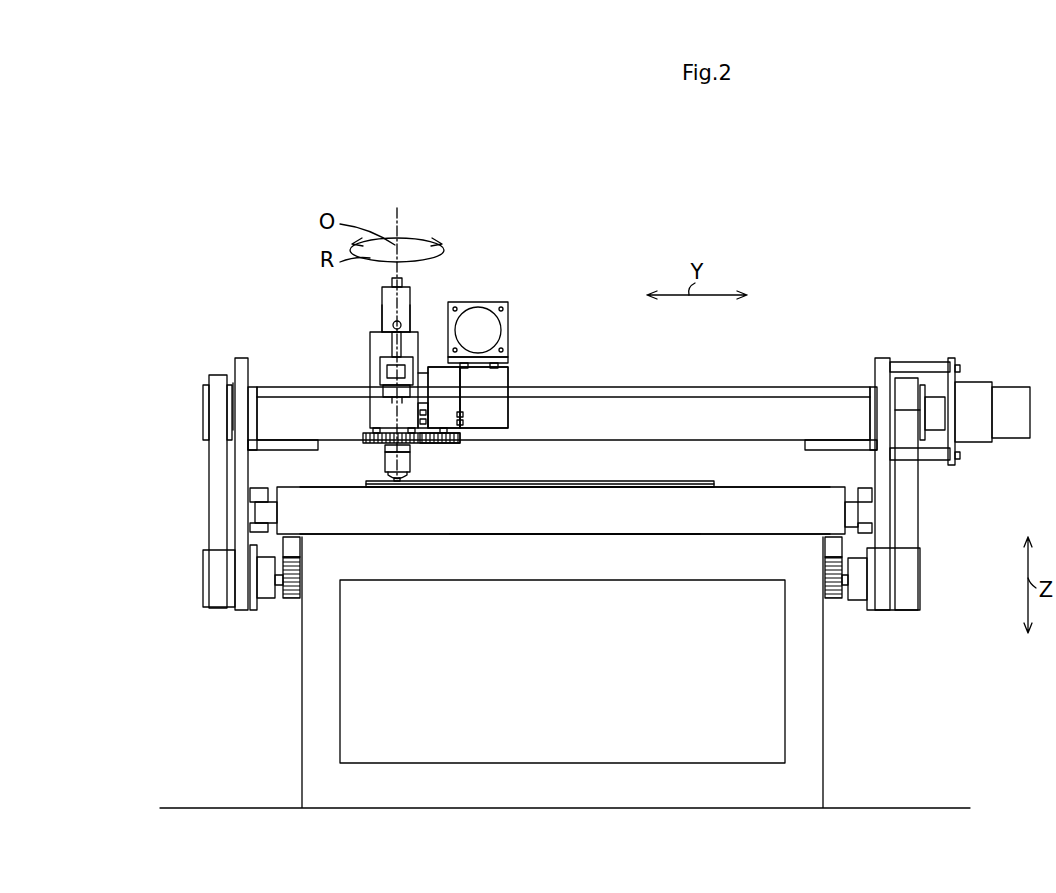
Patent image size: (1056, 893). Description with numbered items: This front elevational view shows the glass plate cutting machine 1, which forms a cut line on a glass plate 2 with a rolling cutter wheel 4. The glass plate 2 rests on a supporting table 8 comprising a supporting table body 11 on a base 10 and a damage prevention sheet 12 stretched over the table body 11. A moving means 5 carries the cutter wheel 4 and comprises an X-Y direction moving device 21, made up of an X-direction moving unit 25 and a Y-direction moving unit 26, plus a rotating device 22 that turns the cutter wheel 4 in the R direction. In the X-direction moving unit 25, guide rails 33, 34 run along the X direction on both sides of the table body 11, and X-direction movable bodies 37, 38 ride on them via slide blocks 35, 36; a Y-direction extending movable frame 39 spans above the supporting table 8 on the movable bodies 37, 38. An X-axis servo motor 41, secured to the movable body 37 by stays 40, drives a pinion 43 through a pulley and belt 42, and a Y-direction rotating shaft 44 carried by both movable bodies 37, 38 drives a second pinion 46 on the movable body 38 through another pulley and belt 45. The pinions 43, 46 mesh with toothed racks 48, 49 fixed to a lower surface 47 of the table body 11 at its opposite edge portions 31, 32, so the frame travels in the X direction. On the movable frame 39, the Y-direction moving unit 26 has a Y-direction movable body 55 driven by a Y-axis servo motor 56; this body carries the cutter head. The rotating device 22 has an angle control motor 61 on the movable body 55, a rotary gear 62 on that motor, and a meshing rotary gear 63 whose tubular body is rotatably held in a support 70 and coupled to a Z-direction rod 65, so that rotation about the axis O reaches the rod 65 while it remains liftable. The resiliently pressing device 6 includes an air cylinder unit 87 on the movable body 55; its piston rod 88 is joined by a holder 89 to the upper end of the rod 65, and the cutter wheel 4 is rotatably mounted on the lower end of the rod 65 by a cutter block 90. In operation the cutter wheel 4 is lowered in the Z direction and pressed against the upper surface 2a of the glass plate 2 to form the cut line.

The glass plate cutting machine 1 is at (208, 362).
The glass plate 2 is at (566, 482).
The upper surface 2a is at (605, 482).
The cutter wheel 4 is at (397, 481).
The moving means 5 is at (200, 380).
The resiliently pressing device 6 is at (415, 292).
The supporting table 8 is at (520, 527).
The base 10 is at (560, 810).
The supporting table body 11 is at (556, 527).
The damage prevention sheet 12 is at (588, 490).
The X-Y direction moving device 21 is at (200, 415).
The rotating device 22 is at (470, 385).
The X-direction moving unit 25 is at (1005, 383).
The Y-direction moving unit 26 is at (505, 300).
The edge portion 31 is at (875, 527).
The edge portion 32 is at (258, 526).
The guide rail 33 is at (852, 510).
The guide rail 34 is at (265, 510).
The slide block 35 is at (870, 498).
The slide block 36 is at (260, 505).
The X-direction movable body 37 is at (885, 362).
The X-direction movable body 38 is at (248, 362).
The movable frame 39 is at (675, 405).
The stays 40 is at (925, 365).
The X-axis servo motor 41 is at (977, 387).
The pulley, belt, and the like 42 is at (910, 578).
The pinion 43 is at (823, 585).
The rotating shaft 44 is at (890, 410).
The pulley, belt, and the like 45 is at (210, 578).
The pinion 46 is at (290, 588).
The lower surface 47 is at (575, 535).
The toothed rack 48 is at (828, 545).
The toothed rack 49 is at (292, 548).
The Y-direction movable body 55 is at (505, 398).
The Y-axis servo motor 56 is at (497, 320).
The angle control motor 61 is at (460, 380).
The rotary gear 62 is at (457, 440).
The rotary gear 63 is at (372, 440).
The rod 65 is at (405, 447).
The support 70 is at (370, 415).
The air cylinder unit 87 is at (410, 313).
The piston rod 88 is at (397, 345).
The holder 89 is at (385, 373).
The cutter block 90 is at (405, 470).